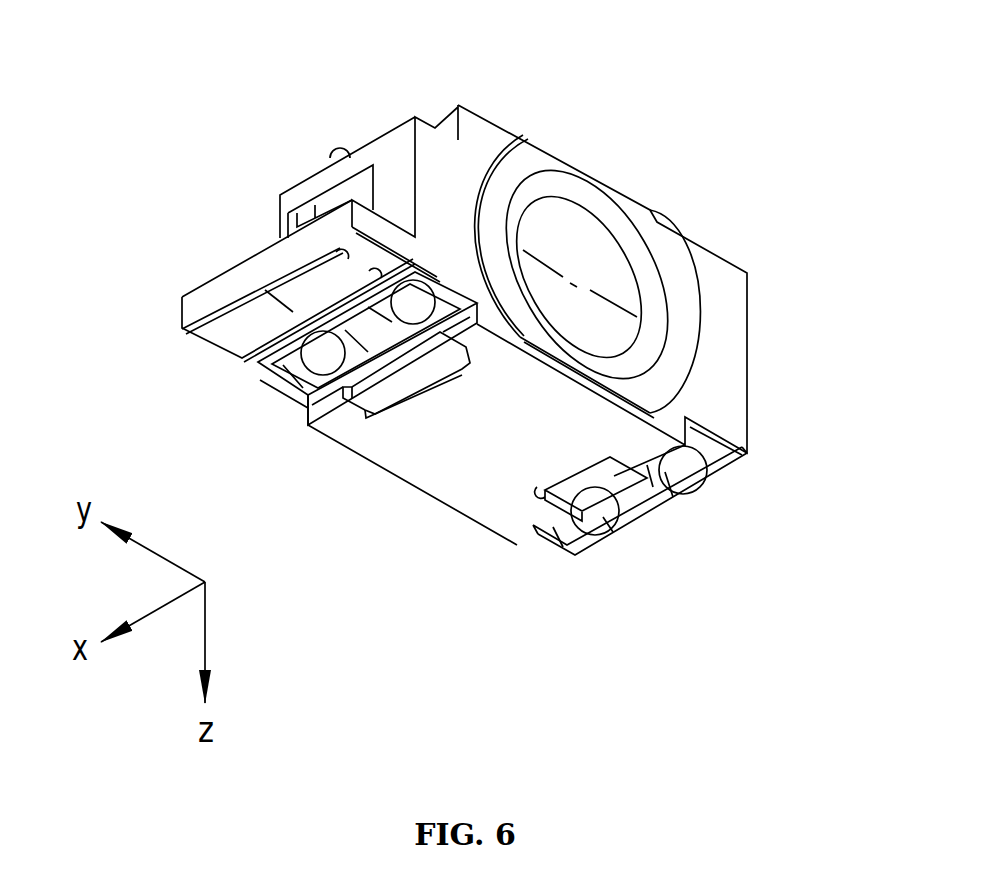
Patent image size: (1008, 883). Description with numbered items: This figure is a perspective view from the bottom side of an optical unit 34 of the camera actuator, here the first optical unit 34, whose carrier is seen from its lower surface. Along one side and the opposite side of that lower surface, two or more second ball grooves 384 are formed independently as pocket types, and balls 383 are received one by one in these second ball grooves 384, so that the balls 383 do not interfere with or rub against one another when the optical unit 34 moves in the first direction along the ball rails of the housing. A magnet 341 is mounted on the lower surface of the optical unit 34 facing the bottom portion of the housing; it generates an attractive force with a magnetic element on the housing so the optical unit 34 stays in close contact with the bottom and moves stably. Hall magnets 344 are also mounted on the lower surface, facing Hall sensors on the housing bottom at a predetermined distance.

The optical unit 34 is at (661, 167).
The magnet 341 is at (403, 390).
The Hall magnet 344 is at (223, 332).
The ball 383 is at (413, 305).
The second ball groove 384 is at (453, 292).